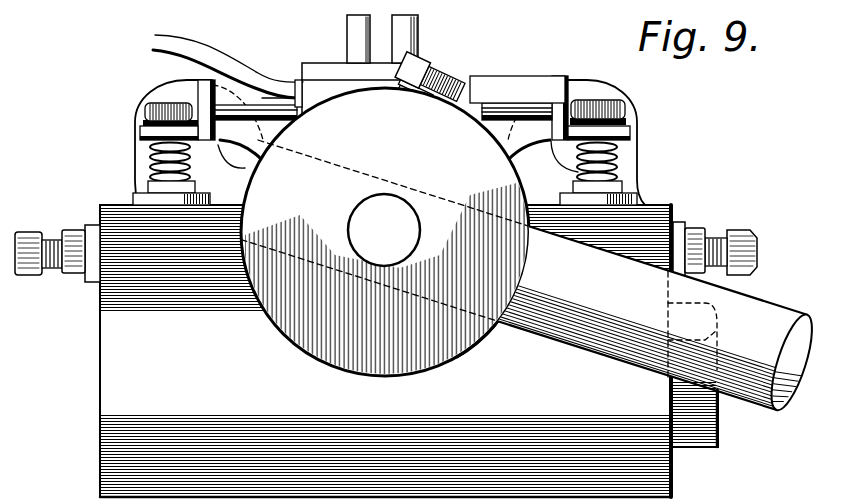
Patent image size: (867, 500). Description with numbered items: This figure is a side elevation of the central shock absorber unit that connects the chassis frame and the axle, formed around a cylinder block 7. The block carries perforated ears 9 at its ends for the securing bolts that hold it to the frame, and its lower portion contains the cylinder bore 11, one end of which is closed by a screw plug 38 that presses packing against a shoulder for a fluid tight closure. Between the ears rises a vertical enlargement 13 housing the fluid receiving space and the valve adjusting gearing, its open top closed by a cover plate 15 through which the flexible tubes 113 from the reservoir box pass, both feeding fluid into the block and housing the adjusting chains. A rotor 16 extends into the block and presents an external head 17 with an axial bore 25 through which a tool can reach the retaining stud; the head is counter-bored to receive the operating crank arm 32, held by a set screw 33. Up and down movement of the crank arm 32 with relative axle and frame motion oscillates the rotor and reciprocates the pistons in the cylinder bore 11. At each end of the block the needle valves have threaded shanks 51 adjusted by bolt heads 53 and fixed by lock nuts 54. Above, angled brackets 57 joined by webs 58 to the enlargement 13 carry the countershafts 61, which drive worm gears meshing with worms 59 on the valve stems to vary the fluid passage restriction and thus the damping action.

The cylinder block 7 is at (100, 365).
The ears 9 is at (138, 158).
The cylinder bore 11 is at (672, 479).
The vertical enlargement 13 is at (301, 64).
The cover plate 15 is at (322, 87).
The rotor 16 is at (339, 363).
The external head 17 is at (463, 338).
The axial bore 25 is at (409, 232).
The operating crank arm 32 is at (760, 315).
The set screw 33 is at (421, 63).
The screw plug 38 is at (707, 433).
The threaded shanks 51 is at (56, 240).
The bolt heads 53 is at (24, 240).
The lock nuts 54 is at (77, 272).
The angled brackets 57 is at (148, 133).
The webs 58 is at (490, 85).
The worms 59 is at (167, 114).
The countershafts 61 is at (278, 116).
The flexible tubes 113 is at (420, 24).